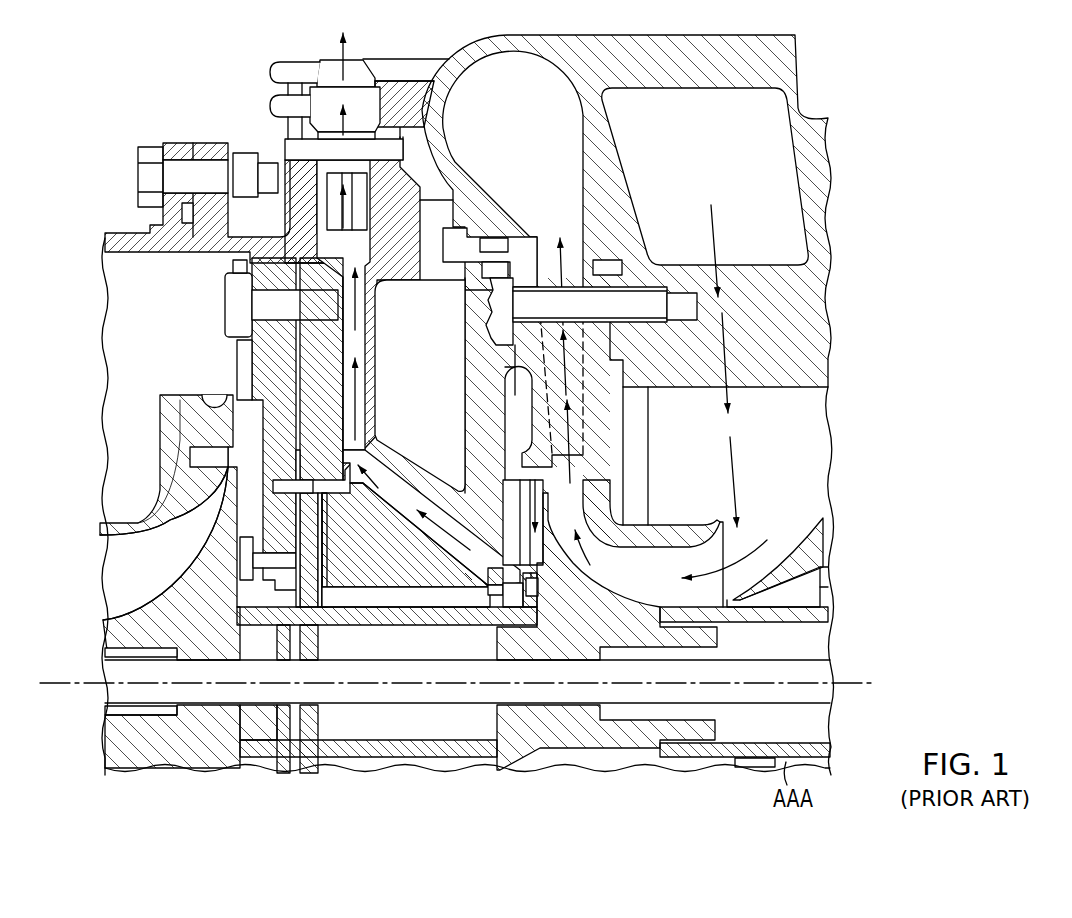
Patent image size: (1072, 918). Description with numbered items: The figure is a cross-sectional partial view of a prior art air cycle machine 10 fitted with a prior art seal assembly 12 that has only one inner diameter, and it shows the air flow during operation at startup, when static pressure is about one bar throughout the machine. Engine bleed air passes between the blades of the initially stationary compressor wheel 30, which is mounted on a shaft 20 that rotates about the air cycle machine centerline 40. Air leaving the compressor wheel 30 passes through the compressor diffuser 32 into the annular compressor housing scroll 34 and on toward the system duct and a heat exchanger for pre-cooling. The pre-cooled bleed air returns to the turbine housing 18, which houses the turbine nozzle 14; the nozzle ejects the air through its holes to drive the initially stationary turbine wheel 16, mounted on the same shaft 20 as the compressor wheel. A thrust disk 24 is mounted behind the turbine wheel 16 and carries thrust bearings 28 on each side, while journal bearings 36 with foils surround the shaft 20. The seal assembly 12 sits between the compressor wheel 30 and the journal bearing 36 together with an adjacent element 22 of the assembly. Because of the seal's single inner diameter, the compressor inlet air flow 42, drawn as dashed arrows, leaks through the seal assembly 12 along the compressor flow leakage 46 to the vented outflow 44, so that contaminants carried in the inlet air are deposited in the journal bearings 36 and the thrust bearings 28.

The air cycle machine 10 is at (106, 117).
The prior art seal assembly 12 is at (530, 600).
The turbine nozzle 14 is at (180, 395).
The turbine wheel 16 is at (162, 530).
The turbine housing 18 is at (174, 234).
The shaft 20 is at (300, 622).
The flange plate 22 is at (318, 616).
The thrust disk 24 is at (310, 560).
The thrust bearings 28 is at (298, 518).
The compressor wheel 30 is at (720, 630).
The compressor diffuser 32 is at (570, 421).
The compressor housing scroll 34 is at (481, 42).
The journal bearings 36 is at (415, 596).
The air cycle machine centerline 40 is at (842, 688).
The compressor inlet air flow 42 is at (718, 238).
The vented outflow 44 is at (340, 53).
The compressor flow leakage 46 is at (500, 598).